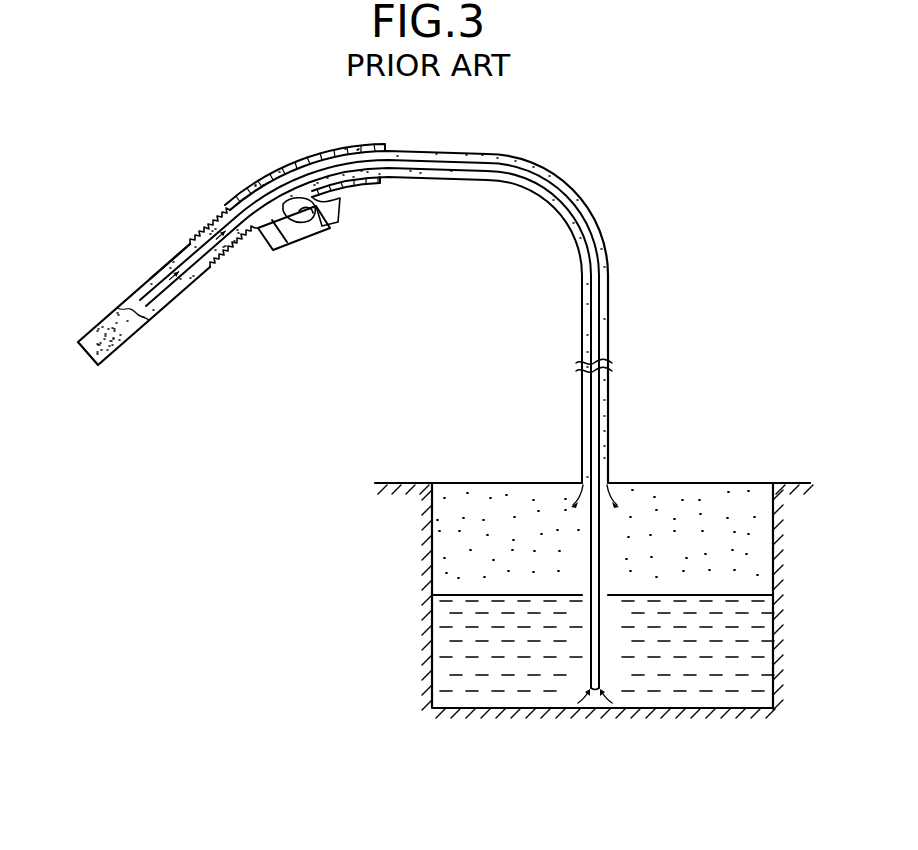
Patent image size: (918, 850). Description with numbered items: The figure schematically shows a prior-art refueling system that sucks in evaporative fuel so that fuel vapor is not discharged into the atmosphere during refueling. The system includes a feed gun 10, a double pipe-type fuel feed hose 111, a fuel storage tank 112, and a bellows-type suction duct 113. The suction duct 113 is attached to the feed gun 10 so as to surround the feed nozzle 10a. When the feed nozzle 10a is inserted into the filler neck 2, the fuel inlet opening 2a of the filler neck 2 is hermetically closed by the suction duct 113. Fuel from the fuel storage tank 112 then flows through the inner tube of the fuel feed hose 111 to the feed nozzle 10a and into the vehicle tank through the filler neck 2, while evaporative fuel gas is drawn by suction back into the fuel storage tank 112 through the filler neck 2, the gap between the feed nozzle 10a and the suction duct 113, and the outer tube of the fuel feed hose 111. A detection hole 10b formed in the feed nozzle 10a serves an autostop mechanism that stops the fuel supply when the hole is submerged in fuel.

The filler neck 2 is at (126, 299).
The fuel inlet opening 2a is at (190, 241).
The feed gun 10 is at (293, 163).
The feed nozzle 10a is at (199, 273).
The detection hole 10b is at (174, 282).
The fuel feed hose 111 is at (567, 189).
The fuel storage tank 112 is at (700, 483).
The suction duct 113 is at (219, 222).